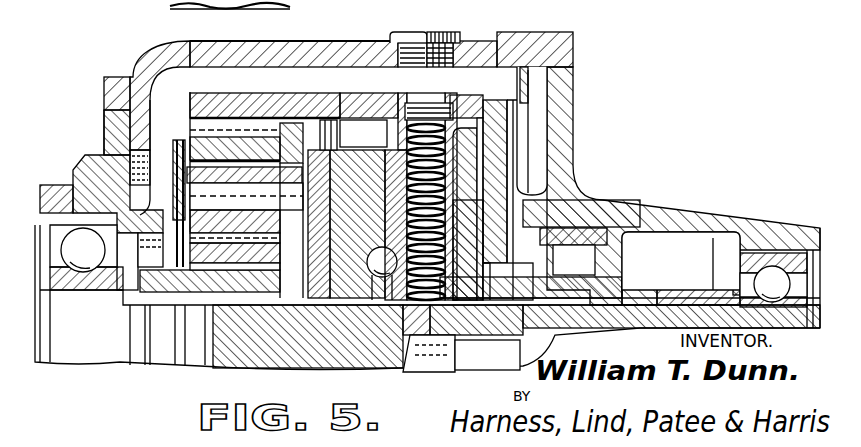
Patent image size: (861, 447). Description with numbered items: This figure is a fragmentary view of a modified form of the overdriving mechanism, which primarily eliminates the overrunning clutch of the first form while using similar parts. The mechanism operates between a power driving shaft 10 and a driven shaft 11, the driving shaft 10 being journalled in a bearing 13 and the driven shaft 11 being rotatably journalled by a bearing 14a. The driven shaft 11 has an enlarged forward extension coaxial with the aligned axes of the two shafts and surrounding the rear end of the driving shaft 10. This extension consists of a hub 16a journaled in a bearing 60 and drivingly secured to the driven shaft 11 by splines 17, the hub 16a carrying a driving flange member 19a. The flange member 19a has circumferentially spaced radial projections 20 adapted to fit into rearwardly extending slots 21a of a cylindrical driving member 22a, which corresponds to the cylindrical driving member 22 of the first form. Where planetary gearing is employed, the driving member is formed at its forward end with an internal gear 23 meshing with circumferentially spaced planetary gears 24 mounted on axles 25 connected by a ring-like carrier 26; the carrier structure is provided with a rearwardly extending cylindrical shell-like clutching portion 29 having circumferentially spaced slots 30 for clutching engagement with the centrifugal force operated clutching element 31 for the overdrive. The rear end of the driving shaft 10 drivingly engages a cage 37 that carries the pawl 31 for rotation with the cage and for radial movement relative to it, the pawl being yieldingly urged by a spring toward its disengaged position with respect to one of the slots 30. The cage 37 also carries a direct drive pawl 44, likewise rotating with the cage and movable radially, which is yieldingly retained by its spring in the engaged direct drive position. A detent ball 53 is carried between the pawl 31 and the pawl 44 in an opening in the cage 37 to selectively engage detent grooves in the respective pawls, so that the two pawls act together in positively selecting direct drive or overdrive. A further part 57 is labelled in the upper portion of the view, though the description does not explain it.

The power driving shaft 10 is at (367, 7).
The driven shaft 11 is at (598, 318).
The bearing 13 is at (72, 215).
The bearing 14a is at (770, 265).
The hub 16a is at (633, 275).
The splines 17 is at (640, 300).
The driving flange member 19a is at (503, 147).
The radial projections 20 is at (490, 112).
The slots 21a is at (523, 107).
The cylindrical driving member 22 is at (297, 125).
The cylindrical driving member 22a is at (403, 103).
The internal gear 23 is at (250, 88).
The planetary gears 24 is at (190, 97).
The axles 25 is at (246, 197).
The ring-like carrier 26 is at (175, 148).
The clutching portion 29 is at (334, 153).
The slots 30 is at (363, 133).
The clutching element 31 is at (378, 108).
The cage 37 is at (290, 298).
The direct drive pawl 44 is at (425, 110).
The detent ball 53 is at (403, 345).
The screw 57 is at (433, 31).
The bearing 60 is at (573, 251).